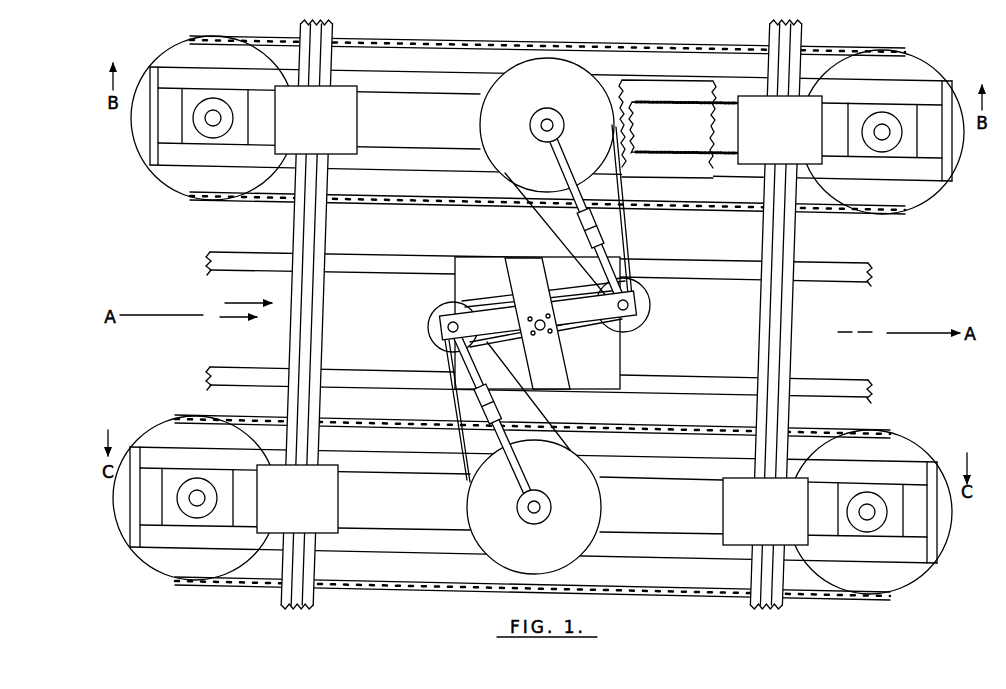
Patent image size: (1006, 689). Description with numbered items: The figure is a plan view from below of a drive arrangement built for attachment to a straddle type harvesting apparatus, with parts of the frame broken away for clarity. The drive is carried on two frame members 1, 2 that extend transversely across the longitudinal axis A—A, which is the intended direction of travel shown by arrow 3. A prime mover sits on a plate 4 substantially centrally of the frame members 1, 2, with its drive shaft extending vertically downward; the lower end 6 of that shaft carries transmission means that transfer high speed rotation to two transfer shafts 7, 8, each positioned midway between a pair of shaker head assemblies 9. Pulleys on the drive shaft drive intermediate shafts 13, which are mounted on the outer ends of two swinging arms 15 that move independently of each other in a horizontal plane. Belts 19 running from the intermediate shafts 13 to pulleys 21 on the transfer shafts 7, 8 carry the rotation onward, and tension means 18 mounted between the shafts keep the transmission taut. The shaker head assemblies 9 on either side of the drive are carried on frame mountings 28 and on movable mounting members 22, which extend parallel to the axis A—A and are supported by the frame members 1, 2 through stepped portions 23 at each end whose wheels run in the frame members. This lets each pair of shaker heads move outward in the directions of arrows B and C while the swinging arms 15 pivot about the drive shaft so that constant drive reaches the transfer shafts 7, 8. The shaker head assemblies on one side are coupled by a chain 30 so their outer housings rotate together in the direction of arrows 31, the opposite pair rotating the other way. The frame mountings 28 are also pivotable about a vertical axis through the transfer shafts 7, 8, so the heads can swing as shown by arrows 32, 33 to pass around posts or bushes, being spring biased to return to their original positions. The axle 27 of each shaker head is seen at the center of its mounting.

The frame member 1 is at (302, 232).
The frame member 2 is at (788, 315).
The prime mover 3 is at (241, 303).
The plate 4 is at (465, 280).
The lower end of the drive shaft 6 is at (541, 332).
The transfer shaft 7 is at (550, 108).
The transfer shaft 8 is at (530, 520).
The shaker head assembly 9 is at (250, 57).
The intermediate shaft 13 is at (448, 328).
The swinging arm 15 is at (495, 323).
The tension means 18 is at (545, 208).
The belt 19 is at (628, 240).
The pulley 21 is at (518, 100).
The mounting member 22 is at (413, 110).
The stepped portion 23 is at (539, 315).
The axle 27 is at (213, 120).
The frame mounting 28 is at (178, 75).
The chain 30 is at (407, 205).
The arrows 31 is at (702, 220).
The arrow 32 is at (877, 478).
The arrow 33 is at (208, 186).